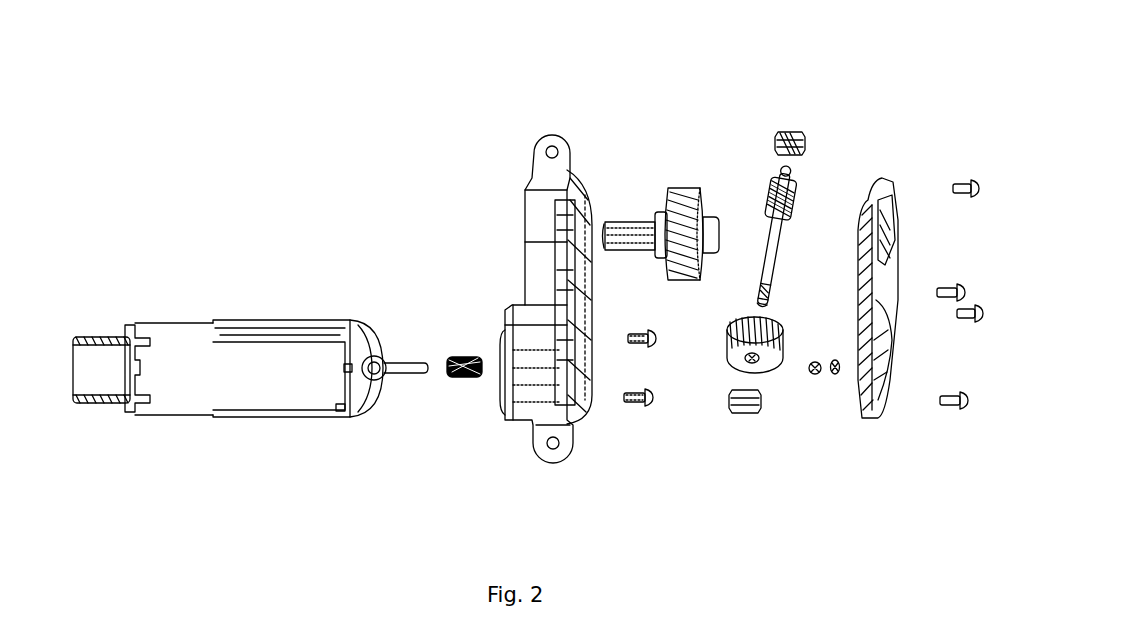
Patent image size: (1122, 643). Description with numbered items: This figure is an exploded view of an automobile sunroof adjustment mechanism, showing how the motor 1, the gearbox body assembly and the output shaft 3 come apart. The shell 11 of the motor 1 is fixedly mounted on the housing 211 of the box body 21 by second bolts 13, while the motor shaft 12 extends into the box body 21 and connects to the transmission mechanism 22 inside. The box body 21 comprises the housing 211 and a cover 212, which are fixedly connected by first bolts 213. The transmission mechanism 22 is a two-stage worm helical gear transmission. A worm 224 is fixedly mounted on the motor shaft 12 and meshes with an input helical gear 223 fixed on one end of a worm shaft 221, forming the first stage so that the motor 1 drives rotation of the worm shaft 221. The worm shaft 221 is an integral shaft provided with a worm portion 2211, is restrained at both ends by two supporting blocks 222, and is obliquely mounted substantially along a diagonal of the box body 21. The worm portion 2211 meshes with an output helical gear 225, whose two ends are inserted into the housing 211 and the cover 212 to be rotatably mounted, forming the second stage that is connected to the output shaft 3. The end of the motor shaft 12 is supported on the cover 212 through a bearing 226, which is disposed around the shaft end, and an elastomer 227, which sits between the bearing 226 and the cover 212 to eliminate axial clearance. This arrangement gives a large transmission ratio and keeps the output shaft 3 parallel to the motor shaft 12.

The motor 1 is at (250, 372).
The shell 11 is at (293, 323).
The motor shaft 12 is at (400, 361).
The worm 224 is at (463, 380).
The box body 21 is at (546, 289).
The housing 211 is at (540, 456).
The second bolts 13 is at (631, 407).
The output shaft 3 is at (622, 221).
The transmission mechanism 22 is at (668, 128).
The output helical gear 225 is at (680, 185).
The worm shaft 221 is at (825, 218).
The worm portion 2211 is at (839, 190).
The supporting blocks 222 is at (788, 131).
The input helical gear 223 is at (727, 370).
The bearing 226 is at (813, 378).
The elastomer 227 is at (832, 378).
The cover 212 is at (878, 420).
The first bolts 213 is at (950, 410).